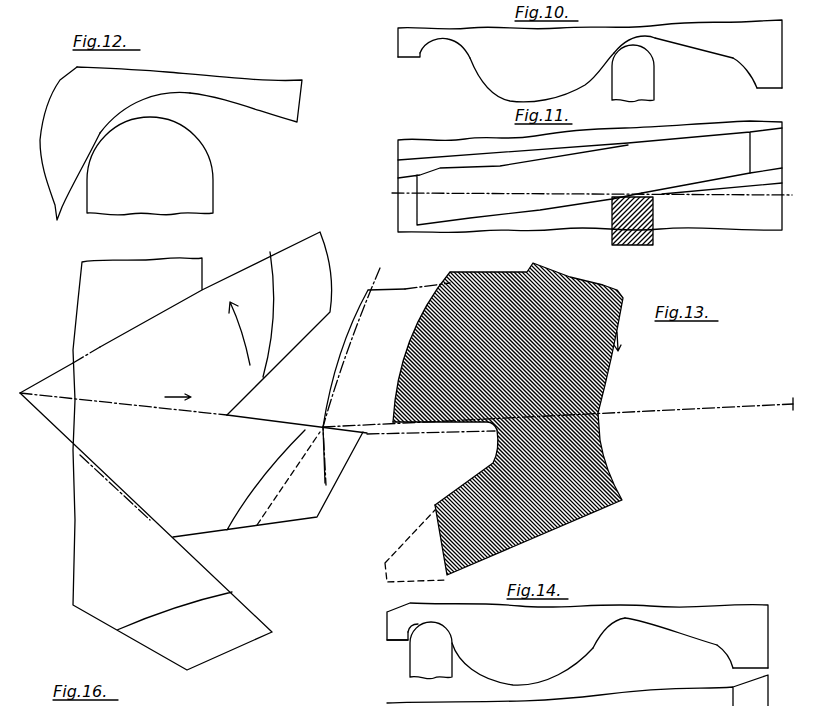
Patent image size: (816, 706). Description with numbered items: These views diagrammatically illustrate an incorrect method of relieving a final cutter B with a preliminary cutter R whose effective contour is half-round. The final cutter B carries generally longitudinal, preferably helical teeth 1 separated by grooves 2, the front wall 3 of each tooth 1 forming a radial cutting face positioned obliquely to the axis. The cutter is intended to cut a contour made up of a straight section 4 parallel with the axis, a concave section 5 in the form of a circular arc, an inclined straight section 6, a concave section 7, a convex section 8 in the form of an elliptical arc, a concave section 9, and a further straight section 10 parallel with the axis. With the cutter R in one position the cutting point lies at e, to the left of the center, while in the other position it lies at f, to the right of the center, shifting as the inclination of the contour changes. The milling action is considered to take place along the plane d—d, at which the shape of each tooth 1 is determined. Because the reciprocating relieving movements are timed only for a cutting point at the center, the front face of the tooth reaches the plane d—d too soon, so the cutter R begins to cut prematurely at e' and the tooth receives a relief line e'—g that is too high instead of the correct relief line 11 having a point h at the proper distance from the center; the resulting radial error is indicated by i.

In FIG. 10, the tooth 1 is at (680, 46).
In FIG. 11, the tooth 1 is at (590, 176).
In FIG. 13, the tooth 1 is at (443, 320).
In FIG. 14, the tooth 1 is at (690, 638).
In FIG. 13, the groove 2 is at (455, 462).
In FIG. 11, the front wall 3 is at (769, 182).
In FIG. 13, the front wall 3 is at (425, 425).
In FIG. 10, the straight section 4 is at (772, 88).
In FIG. 14, the straight section 4 is at (757, 668).
In FIG. 10, the concave section 5 is at (745, 68).
In FIG. 14, the concave section 5 is at (725, 647).
In FIG. 10, the straight section 6 is at (698, 56).
In FIG. 12, the straight section 6 is at (249, 110).
In FIG. 14, the straight section 6 is at (660, 627).
In FIG. 10, the concave section 7 is at (628, 40).
In FIG. 12, the concave section 7 is at (138, 102).
In FIG. 14, the concave section 7 is at (605, 630).
In FIG. 10, the convex section 8 is at (557, 100).
In FIG. 12, the convex section 8 is at (61, 210).
In FIG. 14, the convex section 8 is at (520, 685).
In FIG. 10, the concave section 9 is at (457, 43).
In FIG. 14, the concave section 9 is at (418, 630).
In FIG. 10, the straight section 10 is at (412, 56).
In FIG. 14, the straight section 10 is at (396, 639).
In FIG. 16, the correct relief line 11 is at (354, 386).
In FIG. 10, the cutter B is at (398, 43).
In FIG. 11, the cutter B is at (403, 163).
In FIG. 13, the cutter B is at (601, 397).
In FIG. 14, the cutter B is at (555, 654).
In FIG. 10, the cutter R is at (633, 73).
In FIG. 11, the cutter R is at (657, 216).
In FIG. 12, the cutter R is at (150, 166).
In FIG. 14, the cutter R is at (420, 656).
In FIG. 16, the cutter R is at (176, 451).
In FIG. 13, the cutting plane d is at (431, 433).
In FIG. 16, the cutting plane d is at (193, 410).
In FIG. 10, the cutting point e is at (599, 55).
In FIG. 12, the cutting point e is at (74, 154).
In FIG. 16, the cutting point e is at (310, 414).
In FIG. 16, the premature cutting point e' is at (290, 478).
In FIG. 14, the cutting point f is at (457, 640).
In FIG. 16, the relief line end point g is at (355, 374).
In FIG. 16, the point h is at (345, 352).
In FIG. 16, the radial error i is at (323, 493).